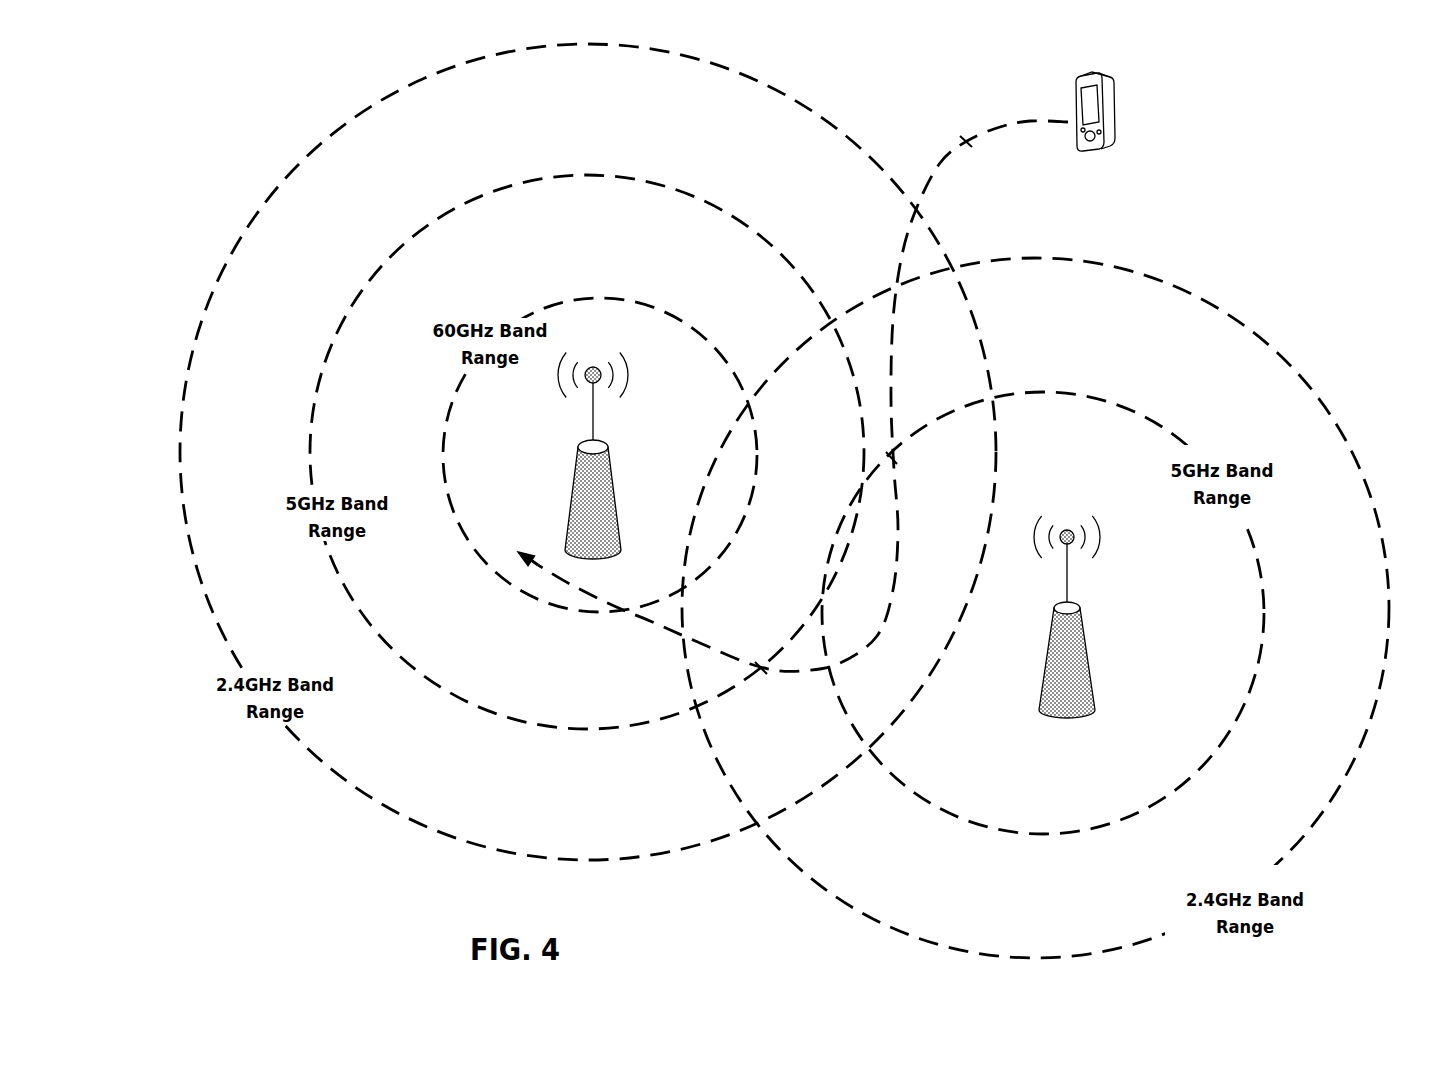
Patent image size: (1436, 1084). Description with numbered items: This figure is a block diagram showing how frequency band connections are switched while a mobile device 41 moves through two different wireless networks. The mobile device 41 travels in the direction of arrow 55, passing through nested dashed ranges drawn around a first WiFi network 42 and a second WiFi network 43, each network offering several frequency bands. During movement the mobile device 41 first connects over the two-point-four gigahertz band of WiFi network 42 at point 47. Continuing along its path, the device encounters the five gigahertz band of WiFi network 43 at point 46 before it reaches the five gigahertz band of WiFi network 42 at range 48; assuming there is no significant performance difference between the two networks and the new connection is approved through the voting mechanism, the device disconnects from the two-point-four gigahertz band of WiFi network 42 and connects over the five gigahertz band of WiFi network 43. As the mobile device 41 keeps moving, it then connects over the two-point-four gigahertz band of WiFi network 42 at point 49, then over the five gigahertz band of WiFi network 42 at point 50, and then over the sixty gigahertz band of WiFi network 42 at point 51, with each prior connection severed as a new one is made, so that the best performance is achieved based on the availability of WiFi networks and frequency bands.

The mobile device 41 is at (1075, 96).
The WiFi network 42 is at (614, 418).
The WiFi network 43 is at (1078, 582).
The point 46 is at (891, 458).
The point 47 is at (918, 210).
The range 48 is at (770, 243).
The point 49 is at (832, 672).
The point 50 is at (761, 668).
The point 51 is at (619, 611).
The arrow 55 is at (965, 141).